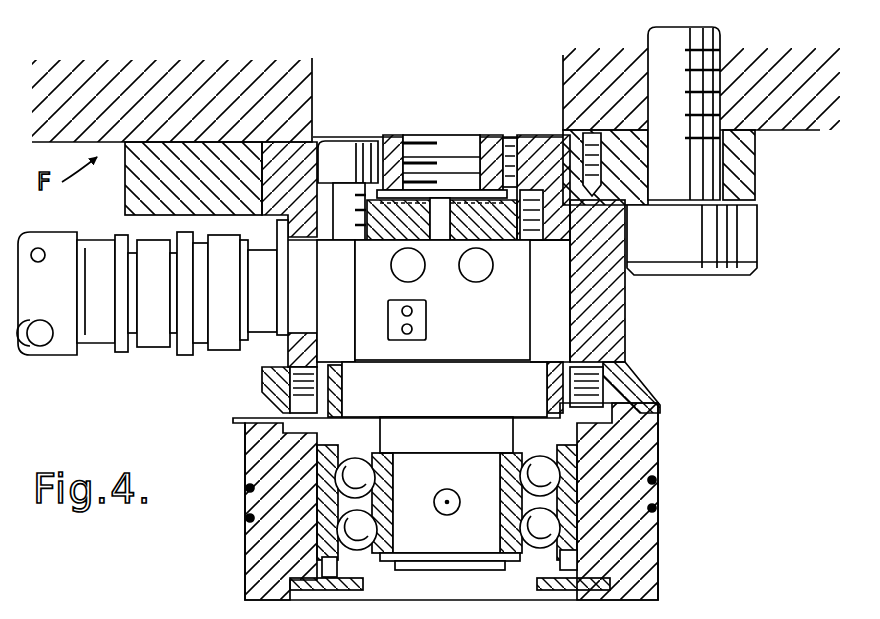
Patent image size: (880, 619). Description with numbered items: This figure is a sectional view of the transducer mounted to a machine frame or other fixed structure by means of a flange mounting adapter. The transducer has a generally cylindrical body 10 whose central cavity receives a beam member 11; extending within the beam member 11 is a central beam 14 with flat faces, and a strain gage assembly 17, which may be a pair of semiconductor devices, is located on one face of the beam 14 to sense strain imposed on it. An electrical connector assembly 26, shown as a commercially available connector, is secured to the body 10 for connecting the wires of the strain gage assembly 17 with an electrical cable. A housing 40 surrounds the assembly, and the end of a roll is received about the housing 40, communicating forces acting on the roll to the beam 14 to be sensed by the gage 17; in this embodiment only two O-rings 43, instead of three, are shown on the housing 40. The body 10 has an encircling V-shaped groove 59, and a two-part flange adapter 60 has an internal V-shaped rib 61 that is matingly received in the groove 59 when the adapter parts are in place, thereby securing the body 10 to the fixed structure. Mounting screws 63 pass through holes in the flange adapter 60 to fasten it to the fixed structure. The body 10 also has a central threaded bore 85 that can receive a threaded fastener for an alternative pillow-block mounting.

The body 10 is at (630, 340).
The beam member 11 is at (341, 247).
The central beam 14 is at (533, 305).
The strain gage assembly 17 is at (432, 317).
The electrical connector assembly 26 is at (149, 356).
The housing 40 is at (233, 581).
The O-rings 43 is at (656, 507).
The V-shaped groove 59 is at (300, 142).
The flange adapter 60 is at (121, 183).
The V-shaped rib 61 is at (605, 142).
The mounting screws 63 is at (757, 172).
The central threaded bore 85 is at (409, 136).